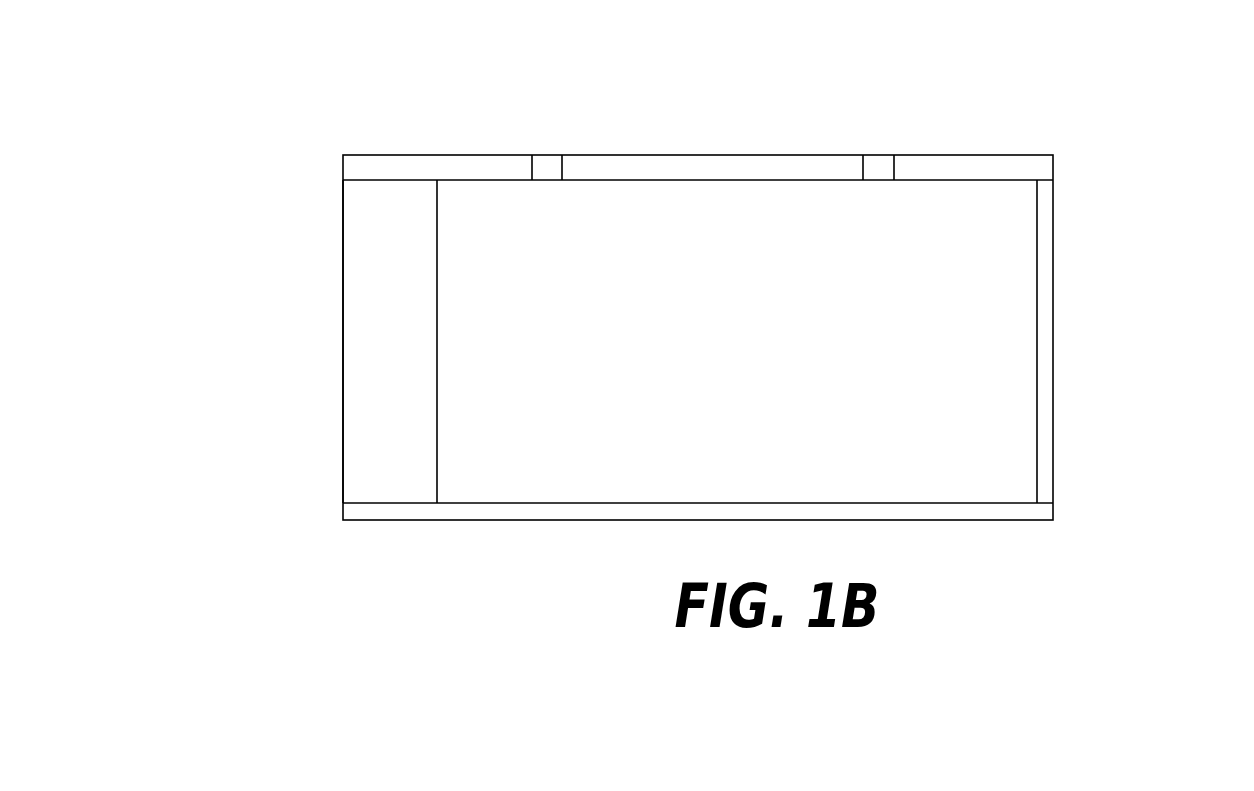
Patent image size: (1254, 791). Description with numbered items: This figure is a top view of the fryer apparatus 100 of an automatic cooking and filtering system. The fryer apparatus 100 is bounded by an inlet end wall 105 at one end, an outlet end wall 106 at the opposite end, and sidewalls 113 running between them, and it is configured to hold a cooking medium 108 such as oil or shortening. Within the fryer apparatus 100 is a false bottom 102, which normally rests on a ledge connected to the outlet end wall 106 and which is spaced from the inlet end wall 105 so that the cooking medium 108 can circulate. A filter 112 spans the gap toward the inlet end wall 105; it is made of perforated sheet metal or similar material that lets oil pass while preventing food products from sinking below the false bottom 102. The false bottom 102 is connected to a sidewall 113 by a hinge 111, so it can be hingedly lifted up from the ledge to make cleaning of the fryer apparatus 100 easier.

The fryer apparatus 100 is at (320, 198).
The false bottom 102 is at (437, 438).
The inlet end wall 105 is at (290, 338).
The outlet end wall 106 is at (1073, 325).
The cooking medium 108 is at (375, 315).
The hinge 111 is at (553, 150).
The filter 112 is at (415, 532).
The sidewall 113 is at (420, 153).